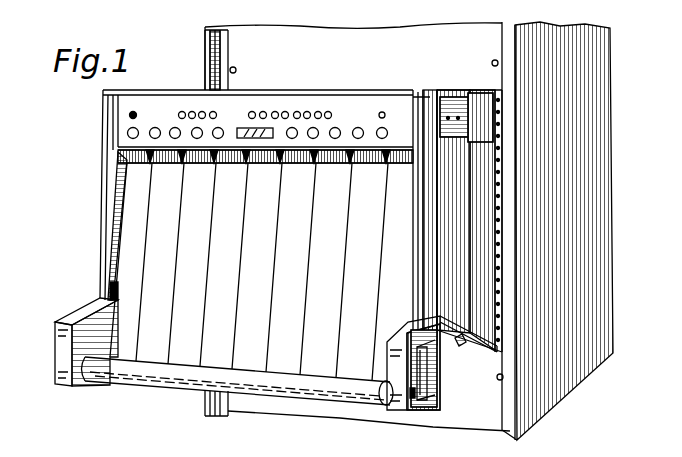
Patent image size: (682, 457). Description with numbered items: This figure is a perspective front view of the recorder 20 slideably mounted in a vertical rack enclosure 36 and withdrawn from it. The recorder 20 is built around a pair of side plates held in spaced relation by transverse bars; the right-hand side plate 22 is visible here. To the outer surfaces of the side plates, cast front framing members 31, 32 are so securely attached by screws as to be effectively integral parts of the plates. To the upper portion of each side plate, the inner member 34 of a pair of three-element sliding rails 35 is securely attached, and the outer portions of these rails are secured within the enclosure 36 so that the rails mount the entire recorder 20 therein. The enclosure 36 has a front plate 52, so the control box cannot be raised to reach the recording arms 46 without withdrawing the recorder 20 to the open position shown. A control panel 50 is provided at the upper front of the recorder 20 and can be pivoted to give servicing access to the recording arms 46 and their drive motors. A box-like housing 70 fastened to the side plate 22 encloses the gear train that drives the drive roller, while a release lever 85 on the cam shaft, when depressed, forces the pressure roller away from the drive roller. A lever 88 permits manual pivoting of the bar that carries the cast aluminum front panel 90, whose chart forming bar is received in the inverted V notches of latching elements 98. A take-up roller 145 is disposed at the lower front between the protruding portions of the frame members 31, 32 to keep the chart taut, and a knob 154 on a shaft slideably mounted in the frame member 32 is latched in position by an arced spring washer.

The recorder 20 is at (100, 207).
The side plate 22 is at (460, 97).
The front framing member 31 is at (103, 242).
The front framing member 32 is at (416, 117).
The inner member 34 is at (458, 100).
The sliding rails 35 is at (482, 84).
The enclosure 36 is at (593, 97).
The recording arm 46 is at (312, 160).
The control panel 50 is at (127, 108).
The front plate 52 is at (253, 45).
The box-like housing 70 is at (458, 352).
The release lever 85 is at (443, 385).
The lever 88 is at (443, 350).
The front panel 90 is at (115, 281).
The latching element 98 is at (115, 152).
The take-up roller 145 is at (176, 390).
The knob 154 is at (417, 393).